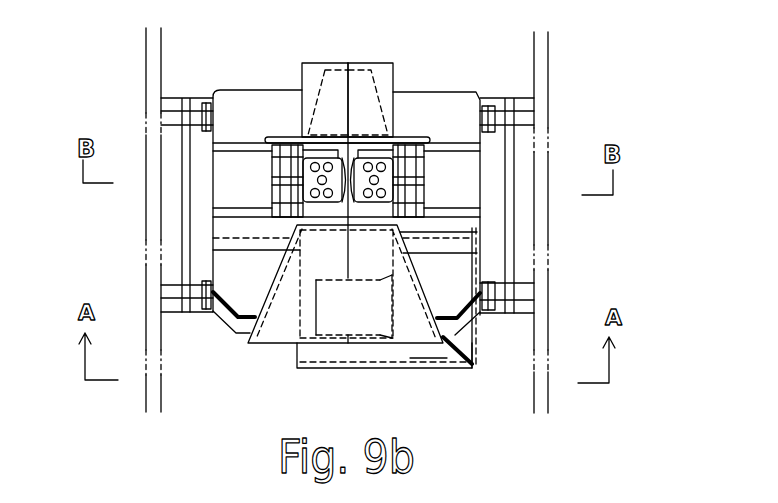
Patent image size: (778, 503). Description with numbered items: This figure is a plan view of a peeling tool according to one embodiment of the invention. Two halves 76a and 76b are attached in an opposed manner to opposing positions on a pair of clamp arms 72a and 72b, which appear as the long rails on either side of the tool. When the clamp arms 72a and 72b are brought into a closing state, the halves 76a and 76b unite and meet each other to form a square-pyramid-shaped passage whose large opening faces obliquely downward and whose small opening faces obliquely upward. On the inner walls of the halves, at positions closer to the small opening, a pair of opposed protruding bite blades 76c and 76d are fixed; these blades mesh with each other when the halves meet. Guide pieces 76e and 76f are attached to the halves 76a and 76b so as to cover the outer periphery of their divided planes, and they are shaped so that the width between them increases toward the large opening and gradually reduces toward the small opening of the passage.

The clamp arm 72a is at (157, 84).
The clamp arm 72b is at (542, 83).
The half 76a is at (302, 108).
The half 76b is at (393, 112).
The protruding bite blade 76c is at (272, 187).
The protruding bite blade 76d is at (424, 188).
The guide piece 76e is at (377, 297).
The guide piece 76f is at (473, 360).